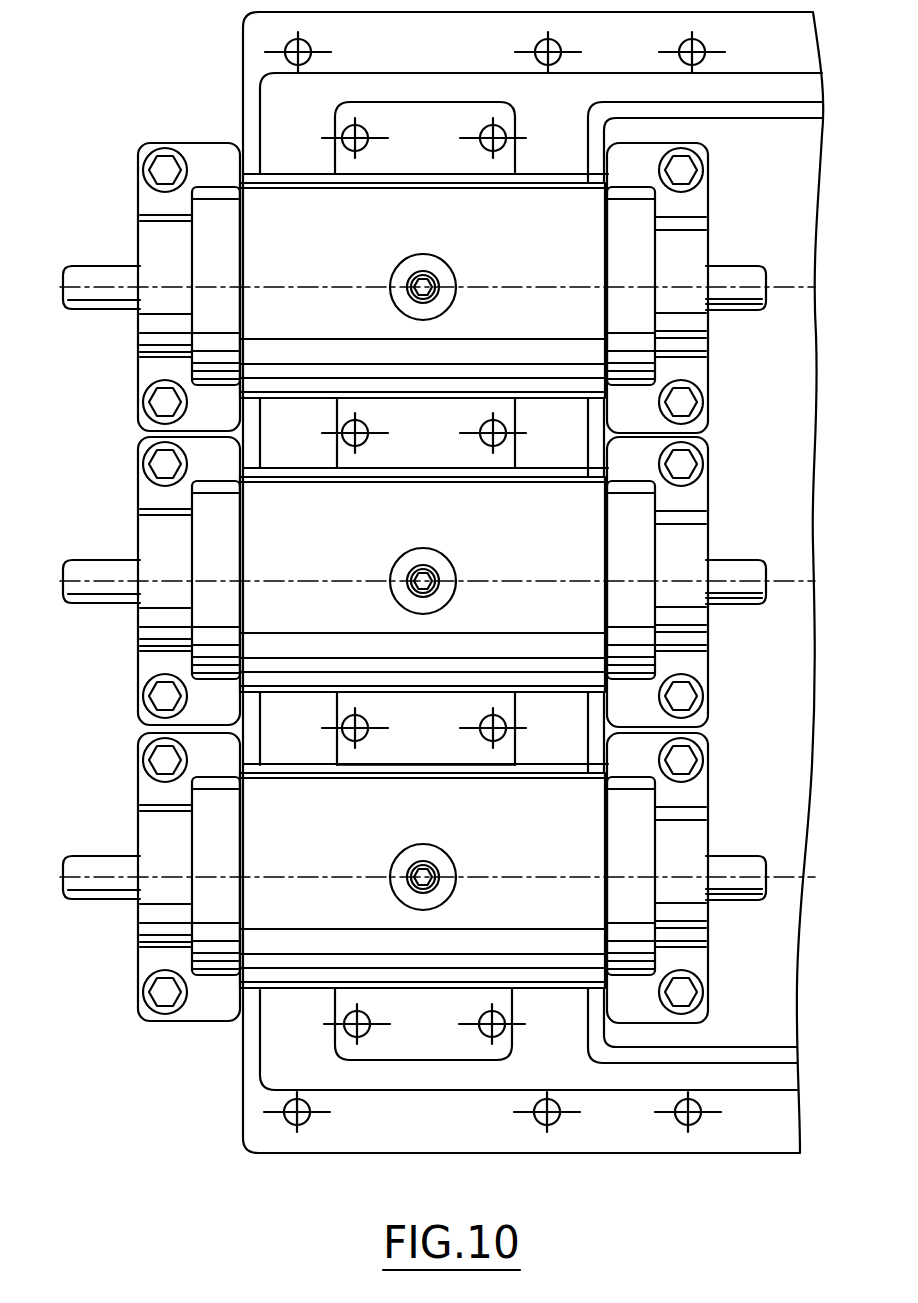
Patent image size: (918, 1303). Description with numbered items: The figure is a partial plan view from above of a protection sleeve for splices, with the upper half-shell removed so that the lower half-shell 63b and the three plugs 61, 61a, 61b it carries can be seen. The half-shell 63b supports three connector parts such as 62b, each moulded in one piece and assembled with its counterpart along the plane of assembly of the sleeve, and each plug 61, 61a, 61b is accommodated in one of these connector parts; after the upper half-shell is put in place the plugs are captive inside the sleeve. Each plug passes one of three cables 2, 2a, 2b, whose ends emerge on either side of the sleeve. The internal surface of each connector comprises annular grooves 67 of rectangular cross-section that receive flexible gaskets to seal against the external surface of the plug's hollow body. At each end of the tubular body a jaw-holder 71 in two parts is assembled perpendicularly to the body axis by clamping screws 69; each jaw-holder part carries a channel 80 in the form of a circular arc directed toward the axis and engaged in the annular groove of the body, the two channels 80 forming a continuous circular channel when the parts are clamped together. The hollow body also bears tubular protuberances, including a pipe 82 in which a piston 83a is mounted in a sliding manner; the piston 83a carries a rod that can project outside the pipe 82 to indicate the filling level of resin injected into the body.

The cable 2 is at (736, 908).
The cable 2a is at (742, 611).
The cable 2b is at (743, 316).
The plug 61 is at (422, 911).
The plug 61a is at (422, 615).
The plug 61b is at (422, 321).
The connector part 62b is at (284, 944).
The lower half-shell 63b is at (252, 1048).
The annular groove 67 is at (270, 732).
The clamping screw 69 is at (129, 890).
The jaw-holder 71 is at (155, 877).
The channel 80 is at (250, 876).
The pipe 82 is at (458, 867).
The piston 83a is at (393, 890).